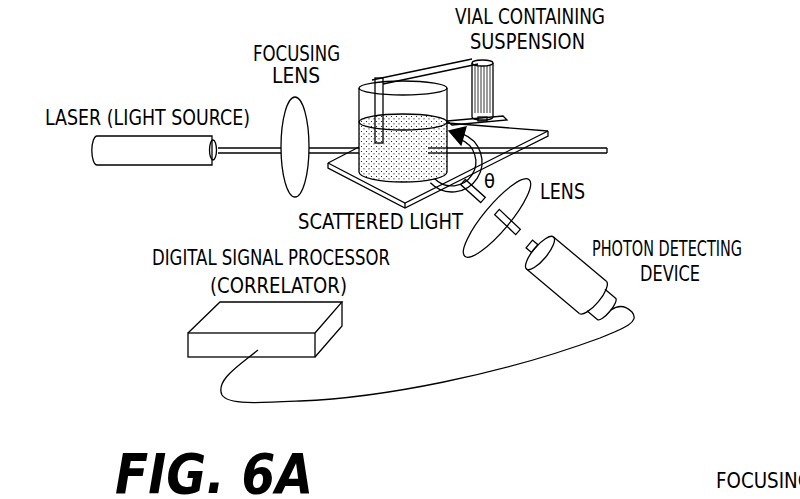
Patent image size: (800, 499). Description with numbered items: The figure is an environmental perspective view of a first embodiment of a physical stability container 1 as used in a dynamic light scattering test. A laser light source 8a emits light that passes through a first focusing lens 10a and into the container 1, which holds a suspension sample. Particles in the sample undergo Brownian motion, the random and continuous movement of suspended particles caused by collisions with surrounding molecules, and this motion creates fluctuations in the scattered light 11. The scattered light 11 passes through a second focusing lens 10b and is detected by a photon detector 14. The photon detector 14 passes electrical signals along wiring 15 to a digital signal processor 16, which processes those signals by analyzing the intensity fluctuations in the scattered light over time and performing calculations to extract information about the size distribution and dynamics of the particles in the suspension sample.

The container 1 is at (391, 68).
The laser light source 8a is at (155, 152).
The focusing lens 10a is at (283, 113).
The focusing lens 10b is at (468, 257).
The scattered light 11 is at (582, 147).
The photon detector 14 is at (567, 303).
The wiring 15 is at (421, 398).
The digital signal processor 16 is at (212, 322).